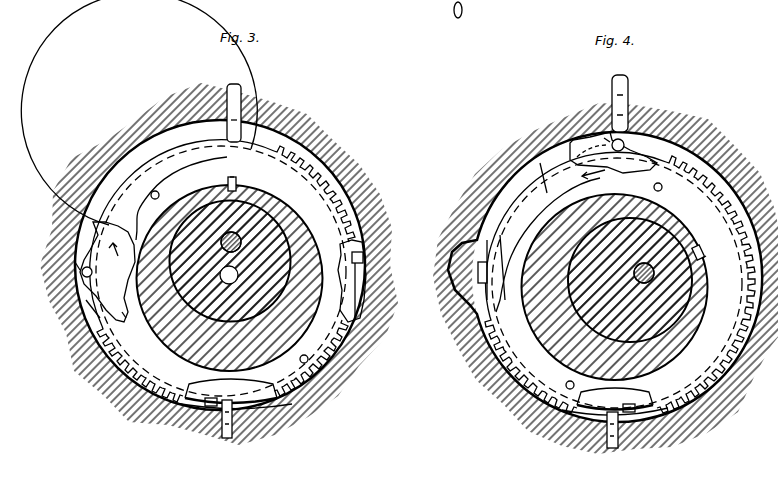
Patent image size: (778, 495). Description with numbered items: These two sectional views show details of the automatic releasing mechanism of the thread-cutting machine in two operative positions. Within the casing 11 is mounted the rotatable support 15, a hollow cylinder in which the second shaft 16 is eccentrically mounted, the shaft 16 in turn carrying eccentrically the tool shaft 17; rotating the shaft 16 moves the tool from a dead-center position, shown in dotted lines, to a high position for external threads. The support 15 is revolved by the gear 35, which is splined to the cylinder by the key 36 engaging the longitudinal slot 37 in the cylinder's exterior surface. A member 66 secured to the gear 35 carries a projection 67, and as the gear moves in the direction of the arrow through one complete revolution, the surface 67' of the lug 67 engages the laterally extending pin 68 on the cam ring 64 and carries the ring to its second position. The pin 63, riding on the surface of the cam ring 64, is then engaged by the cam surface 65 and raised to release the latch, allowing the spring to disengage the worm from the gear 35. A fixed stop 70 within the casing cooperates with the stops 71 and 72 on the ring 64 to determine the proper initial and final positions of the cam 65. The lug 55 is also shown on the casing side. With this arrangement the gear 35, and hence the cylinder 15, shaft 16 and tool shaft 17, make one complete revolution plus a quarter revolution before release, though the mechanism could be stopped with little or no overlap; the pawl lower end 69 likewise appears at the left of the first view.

In FIG. 3, the casing part 11 is at (355, 162).
In FIG. 4, the casing part 11 is at (727, 168).
In FIG. 3, the rotatable support 15 is at (298, 318).
In FIG. 4, the rotatable support 15 is at (568, 350).
In FIG. 3, the second shaft 16 is at (272, 240).
In FIG. 4, the second shaft 16 is at (672, 292).
In FIG. 3, the tool shaft 17 is at (240, 232).
In FIG. 4, the tool shaft 17 is at (672, 250).
In FIG. 3, the gear 35 is at (222, 271).
In FIG. 4, the gear 35 is at (620, 282).
In FIG. 3, the key 36 is at (227, 184).
In FIG. 4, the key 36 is at (700, 252).
In FIG. 3, the longitudinal slot 37 is at (237, 186).
In FIG. 4, the longitudinal slot 37 is at (705, 260).
In FIG. 3, the housing lug 55 is at (72, 268).
In FIG. 3, the pin 63 is at (236, 108).
In FIG. 4, the pin 63 is at (628, 90).
In FIG. 4, the cam ring 64 is at (655, 158).
In FIG. 4, the cam surface 65 is at (606, 140).
In FIG. 3, the member 66 is at (128, 212).
In FIG. 4, the member 66 is at (547, 193).
In FIG. 3, the projection 67 is at (86, 263).
In FIG. 4, the projection 67 is at (591, 141).
In FIG. 3, the surface of the lug 67' is at (132, 317).
In FIG. 3, the laterally extending pin 68 is at (83, 277).
In FIG. 4, the laterally extending pin 68 is at (632, 146).
In FIG. 3, the pawl lower end 69 is at (82, 328).
In FIG. 3, the fixed stop 70 is at (232, 415).
In FIG. 4, the fixed stop 70 is at (618, 432).
In FIG. 3, the stop 71 is at (217, 404).
In FIG. 4, the stop 71 is at (478, 272).
In FIG. 3, the stop 72 is at (362, 258).
In FIG. 4, the stop 72 is at (636, 414).